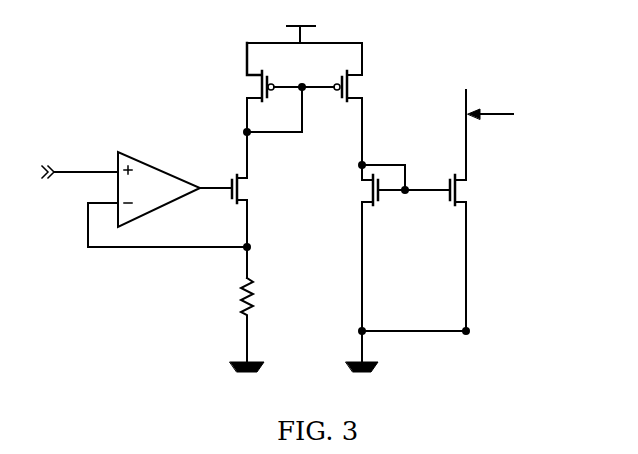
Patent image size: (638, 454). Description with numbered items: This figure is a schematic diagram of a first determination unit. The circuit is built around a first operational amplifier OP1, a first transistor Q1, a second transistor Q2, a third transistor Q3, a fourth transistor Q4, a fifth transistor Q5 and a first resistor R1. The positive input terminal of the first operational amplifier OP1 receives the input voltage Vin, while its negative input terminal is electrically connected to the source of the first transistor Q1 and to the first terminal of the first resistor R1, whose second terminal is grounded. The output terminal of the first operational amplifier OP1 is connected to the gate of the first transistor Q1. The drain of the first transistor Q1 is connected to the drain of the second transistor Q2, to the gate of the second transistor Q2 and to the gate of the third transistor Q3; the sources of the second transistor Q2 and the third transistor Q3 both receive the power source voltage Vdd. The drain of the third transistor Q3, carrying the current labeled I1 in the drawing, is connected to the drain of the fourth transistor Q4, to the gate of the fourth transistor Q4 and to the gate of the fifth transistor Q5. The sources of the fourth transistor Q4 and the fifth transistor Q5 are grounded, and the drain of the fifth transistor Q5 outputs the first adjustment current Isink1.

The power source voltage Vdd is at (290, 21).
The first transistor Q1 is at (258, 205).
The second transistor Q2 is at (241, 110).
The third transistor Q3 is at (367, 111).
The fourth transistor Q4 is at (340, 268).
The fifth transistor Q5 is at (476, 210).
The first resistor R1 is at (259, 325).
The first operational amplifier OP1 is at (167, 199).
The current I1 is at (377, 132).
The input voltage Vin is at (80, 161).
The first adjustment current Isink1 is at (500, 104).